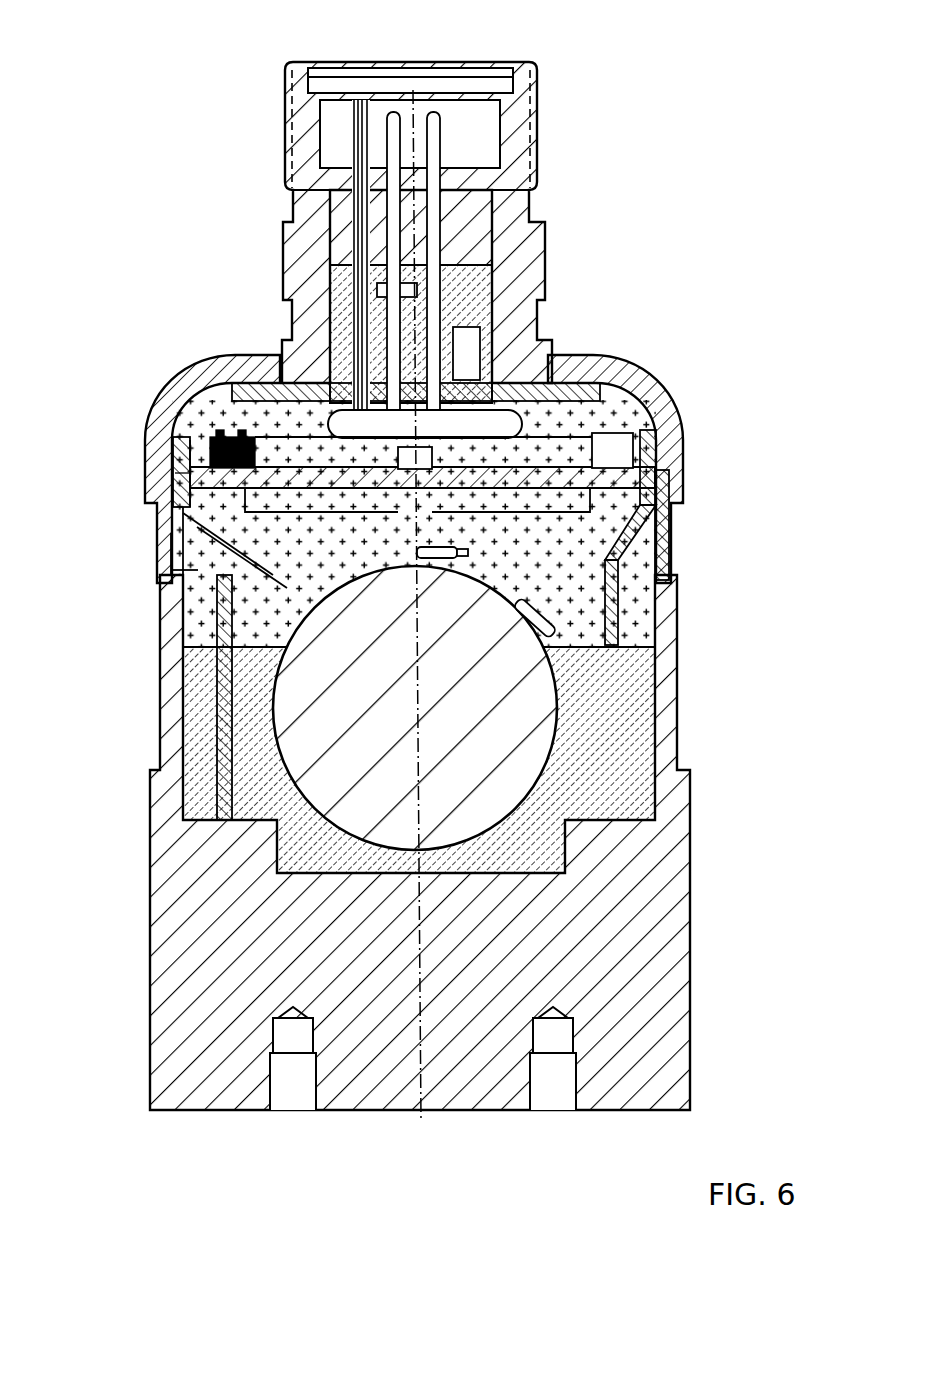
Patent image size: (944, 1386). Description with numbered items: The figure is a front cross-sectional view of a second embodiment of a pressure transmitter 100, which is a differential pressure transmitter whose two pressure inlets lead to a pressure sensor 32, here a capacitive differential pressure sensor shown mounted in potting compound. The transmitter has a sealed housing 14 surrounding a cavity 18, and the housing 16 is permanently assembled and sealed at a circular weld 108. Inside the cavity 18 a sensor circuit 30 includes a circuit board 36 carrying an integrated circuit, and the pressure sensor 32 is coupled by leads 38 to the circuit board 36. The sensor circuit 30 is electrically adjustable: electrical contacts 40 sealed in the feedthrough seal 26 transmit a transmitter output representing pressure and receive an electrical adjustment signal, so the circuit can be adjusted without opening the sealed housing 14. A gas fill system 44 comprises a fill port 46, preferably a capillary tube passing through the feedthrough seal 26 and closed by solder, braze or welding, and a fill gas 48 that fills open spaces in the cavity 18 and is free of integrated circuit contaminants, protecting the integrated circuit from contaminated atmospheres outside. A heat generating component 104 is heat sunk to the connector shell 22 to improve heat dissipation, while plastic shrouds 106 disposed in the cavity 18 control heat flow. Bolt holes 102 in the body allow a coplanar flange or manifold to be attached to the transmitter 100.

The pressure transmitter 100 is at (410, 601).
The sealed housing 14 is at (407, 322).
The housing 16 is at (158, 630).
The cavity 18 is at (316, 581).
The connector shell 22 is at (456, 191).
The feedthrough seal 26 is at (458, 228).
The sensor circuit 30 is at (104, 448).
The pressure sensor 32 is at (420, 741).
The circuit board 36 is at (617, 476).
The leads 38 is at (517, 582).
The electrical contacts 40 is at (395, 112).
The gas fill system 44 is at (336, 50).
The fill port 46 is at (360, 103).
The fill gas 48 is at (573, 581).
The bolt holes 102 is at (555, 1097).
The heat generating component 104 is at (467, 362).
The plastic shrouds 106 is at (668, 393).
The circular weld 108 is at (675, 578).